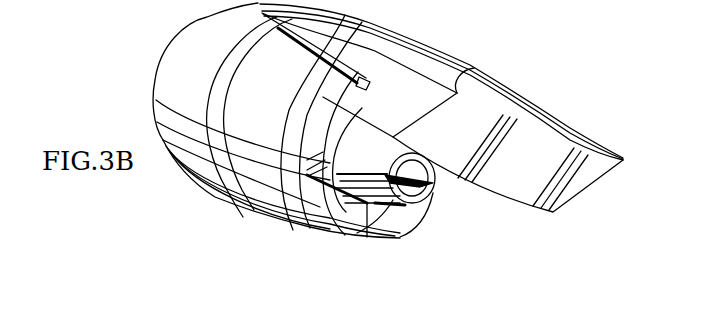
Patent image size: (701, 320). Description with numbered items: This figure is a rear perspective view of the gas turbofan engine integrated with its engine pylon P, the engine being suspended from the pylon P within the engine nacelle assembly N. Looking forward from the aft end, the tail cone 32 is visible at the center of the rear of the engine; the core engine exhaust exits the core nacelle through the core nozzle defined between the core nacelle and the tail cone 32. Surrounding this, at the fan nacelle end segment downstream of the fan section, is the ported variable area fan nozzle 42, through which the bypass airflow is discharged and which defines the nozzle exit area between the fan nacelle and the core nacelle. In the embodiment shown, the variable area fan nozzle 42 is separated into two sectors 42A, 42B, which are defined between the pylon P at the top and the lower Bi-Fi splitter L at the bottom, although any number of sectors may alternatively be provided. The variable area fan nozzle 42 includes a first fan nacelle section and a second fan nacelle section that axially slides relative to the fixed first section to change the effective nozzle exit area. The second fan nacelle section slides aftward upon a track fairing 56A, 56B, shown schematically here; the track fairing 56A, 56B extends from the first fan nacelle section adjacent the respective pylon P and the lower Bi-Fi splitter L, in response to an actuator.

The variable area fan nozzle 42 is at (268, 119).
The track fairing 56A is at (338, 20).
The engine pylon P is at (476, 67).
The tail cone 32 is at (414, 170).
The VAFN sector 42B is at (405, 208).
The track fairing 56B is at (405, 229).
The VAFN sector 42A is at (299, 190).
The lower Bi-Fi splitter L is at (347, 216).
The engine nacelle assembly N is at (193, 181).